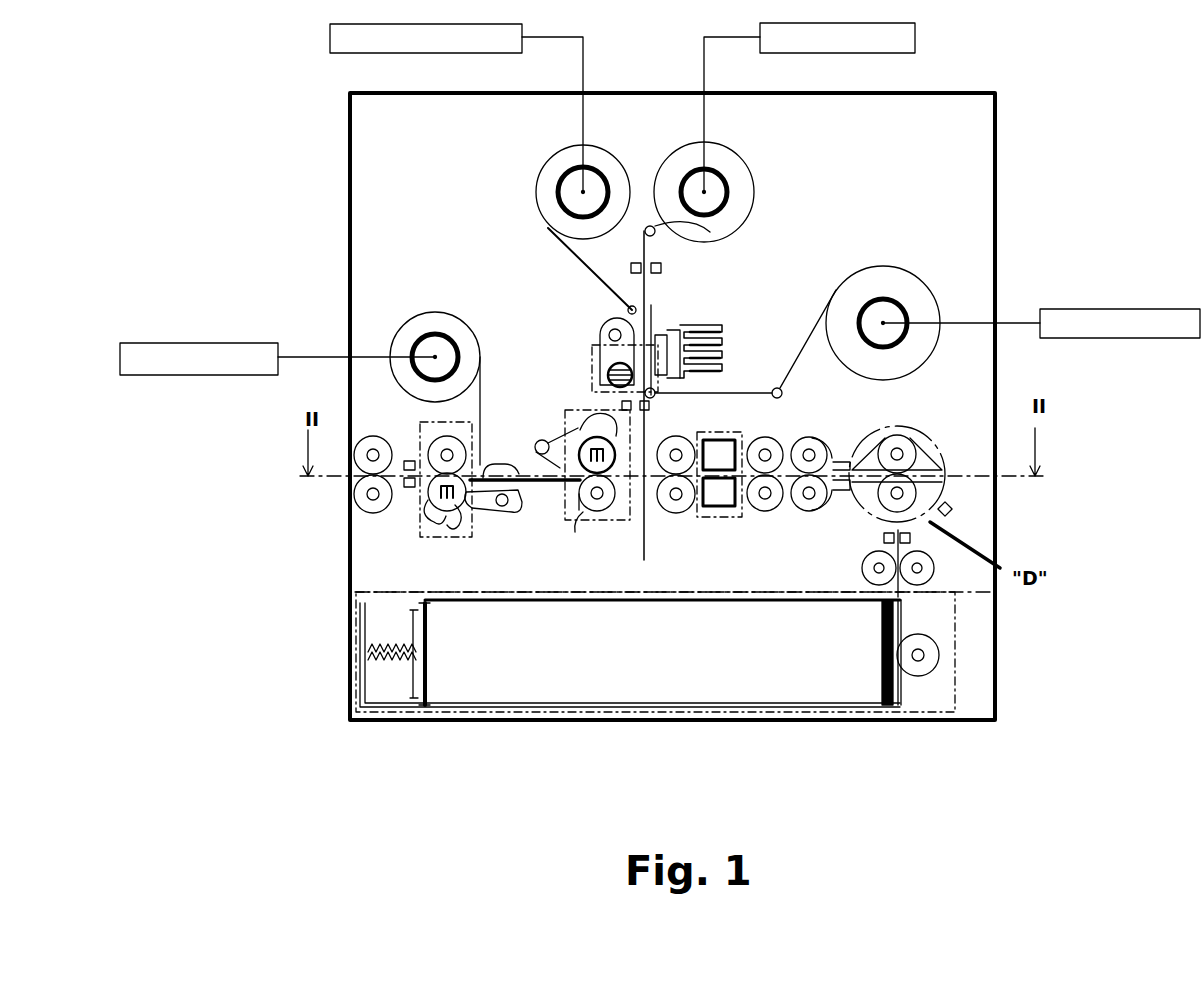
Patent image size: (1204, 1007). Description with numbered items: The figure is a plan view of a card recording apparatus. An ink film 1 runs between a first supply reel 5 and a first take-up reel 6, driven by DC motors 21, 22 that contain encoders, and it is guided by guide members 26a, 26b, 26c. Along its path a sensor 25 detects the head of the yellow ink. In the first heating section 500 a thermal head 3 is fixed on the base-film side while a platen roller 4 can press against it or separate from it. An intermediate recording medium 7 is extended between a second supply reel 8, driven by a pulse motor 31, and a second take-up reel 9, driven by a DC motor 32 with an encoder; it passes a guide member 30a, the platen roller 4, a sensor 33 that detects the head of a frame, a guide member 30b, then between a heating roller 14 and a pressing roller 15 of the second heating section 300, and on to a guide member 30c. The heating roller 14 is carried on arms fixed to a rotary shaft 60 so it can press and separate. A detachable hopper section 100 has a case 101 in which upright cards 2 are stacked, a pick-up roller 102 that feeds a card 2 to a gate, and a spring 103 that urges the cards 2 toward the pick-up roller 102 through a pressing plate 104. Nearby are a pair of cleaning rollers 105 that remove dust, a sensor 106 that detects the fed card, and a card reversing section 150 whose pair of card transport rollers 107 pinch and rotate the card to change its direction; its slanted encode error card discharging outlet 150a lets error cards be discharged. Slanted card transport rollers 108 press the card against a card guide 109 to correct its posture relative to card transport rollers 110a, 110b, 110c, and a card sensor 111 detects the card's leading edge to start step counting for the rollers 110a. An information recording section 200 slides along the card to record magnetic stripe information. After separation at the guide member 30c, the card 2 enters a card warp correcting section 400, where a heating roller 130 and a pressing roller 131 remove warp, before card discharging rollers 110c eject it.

The ink film 1 is at (650, 242).
The card 2 is at (900, 710).
The thermal head 3 is at (690, 330).
The platen roller 4 is at (608, 380).
The first supply reel 5 is at (754, 195).
The first take-up reel 6 is at (925, 283).
The intermediate recording medium 7 is at (574, 258).
The second supply reel 8 is at (537, 185).
The second take-up reel 9 is at (455, 316).
The heating roller 14 is at (572, 418).
The pressing roller 15 is at (577, 530).
The DC motor 21 is at (915, 37).
The DC motor 22 is at (1090, 309).
The sensor 25 is at (661, 268).
The guide member 26a is at (645, 236).
The guide member 26b is at (655, 400).
The guide member 26c is at (778, 388).
The guide member 30a is at (628, 308).
The guide member 30b is at (600, 512).
The guide member 30c is at (515, 485).
The pulse motor 31 is at (420, 53).
The DC motor 32 is at (196, 343).
The sensor 33 is at (620, 395).
The rotary shaft 60 is at (536, 445).
The hopper section 100 is at (955, 685).
The case 101 is at (790, 708).
The pick-up roller 102 is at (935, 645).
The spring 103 is at (378, 660).
The pressing plate 104 is at (413, 700).
The cleaning rollers 105 is at (935, 572).
The sensor 106 is at (866, 555).
The card transport rollers 107 is at (908, 436).
The card transport rollers 108 is at (805, 511).
The card guide 109 is at (791, 433).
The card transport rollers 110a is at (765, 511).
The card transport rollers 110b is at (676, 513).
The card discharging rollers 110c is at (373, 513).
The card sensor 111 is at (842, 495).
The heating roller 130 is at (470, 515).
The pressing roller 131 is at (440, 438).
The card reversing section 150 is at (938, 440).
The encode error card discharging outlet 150a is at (1003, 560).
The information recording section 200 is at (716, 520).
The second heating section 300 is at (590, 537).
The card warp correcting section 400 is at (447, 540).
The first heating section 500 is at (592, 352).